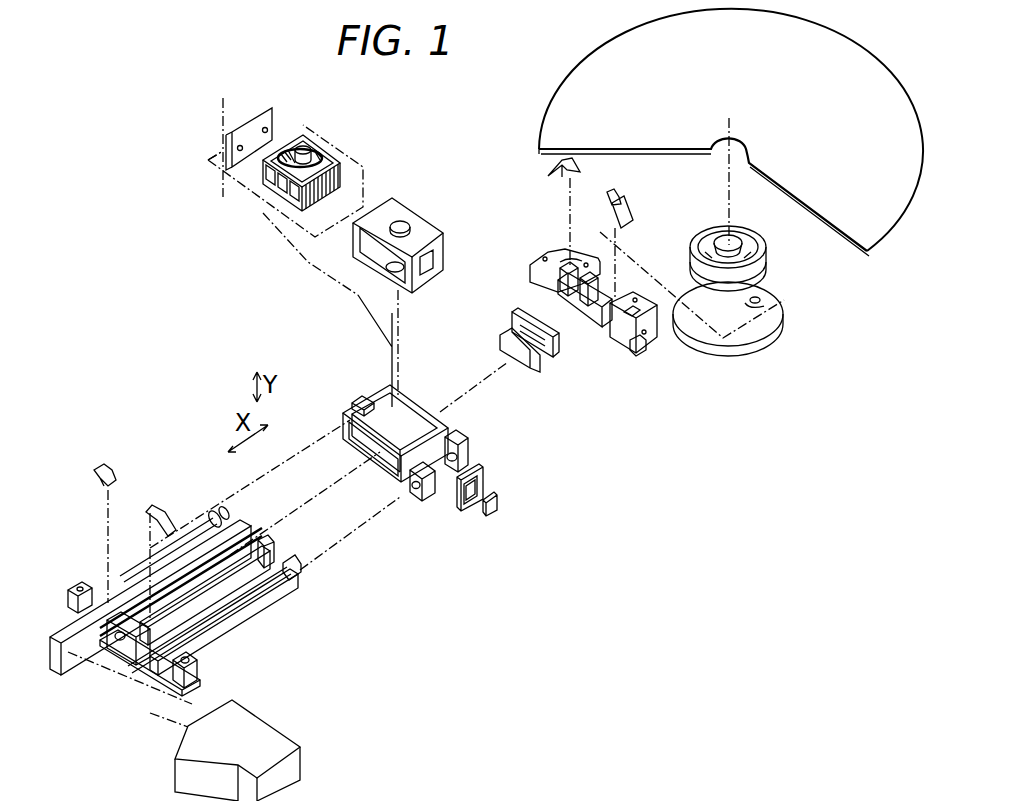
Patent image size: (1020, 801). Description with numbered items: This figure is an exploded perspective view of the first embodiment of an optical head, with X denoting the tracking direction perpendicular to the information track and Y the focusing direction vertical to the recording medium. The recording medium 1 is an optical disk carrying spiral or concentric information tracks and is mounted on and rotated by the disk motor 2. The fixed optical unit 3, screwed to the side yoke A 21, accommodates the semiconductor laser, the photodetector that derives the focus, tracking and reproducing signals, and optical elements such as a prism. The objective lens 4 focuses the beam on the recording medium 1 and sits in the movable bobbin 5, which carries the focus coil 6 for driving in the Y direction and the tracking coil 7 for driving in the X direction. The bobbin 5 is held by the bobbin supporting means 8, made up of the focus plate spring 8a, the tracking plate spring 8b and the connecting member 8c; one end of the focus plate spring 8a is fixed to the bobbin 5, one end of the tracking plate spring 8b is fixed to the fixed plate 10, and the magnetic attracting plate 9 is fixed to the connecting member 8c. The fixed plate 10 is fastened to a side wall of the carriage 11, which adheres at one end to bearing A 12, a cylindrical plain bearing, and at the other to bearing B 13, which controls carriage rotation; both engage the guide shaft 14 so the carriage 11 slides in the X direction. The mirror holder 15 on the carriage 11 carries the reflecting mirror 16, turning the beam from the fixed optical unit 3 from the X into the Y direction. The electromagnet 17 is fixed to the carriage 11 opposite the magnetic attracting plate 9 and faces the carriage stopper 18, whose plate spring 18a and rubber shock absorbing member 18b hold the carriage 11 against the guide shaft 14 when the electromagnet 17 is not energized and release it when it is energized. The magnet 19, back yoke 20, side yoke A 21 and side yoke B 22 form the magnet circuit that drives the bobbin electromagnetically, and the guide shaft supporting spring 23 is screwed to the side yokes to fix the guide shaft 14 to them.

The recording medium 1 is at (786, 176).
The disk motor 2 is at (762, 322).
The fixed optical unit 3 is at (293, 765).
The objective lens 4 is at (306, 146).
The movable bobbin 5 is at (252, 206).
The focus coil 6 is at (290, 148).
The tracking coil 7 is at (281, 156).
The bobbin supporting means 8 is at (240, 255).
The focus plate spring 8a is at (365, 215).
The tracking plate spring 8b is at (377, 262).
The connecting member 8c is at (368, 295).
The magnetic attracting plate 9 is at (445, 245).
The fixed plate 10 is at (266, 113).
The carriage 11 is at (460, 437).
The bearing A 12 is at (470, 455).
The bearing B 13 is at (357, 400).
The guide shaft 14 is at (192, 530).
The mirror holder 15 is at (527, 360).
The reflecting mirror 16 is at (507, 370).
The electromagnet 17 is at (460, 507).
The carriage stopper 18 is at (567, 478).
The plate spring 18a is at (497, 513).
The shock absorbing member 18b is at (481, 485).
The magnet 19 is at (217, 553).
The back yoke 20 is at (228, 507).
The side yoke A 21 is at (188, 667).
The side yoke B 22 is at (650, 352).
The guide shaft supporting spring 23 is at (557, 173).